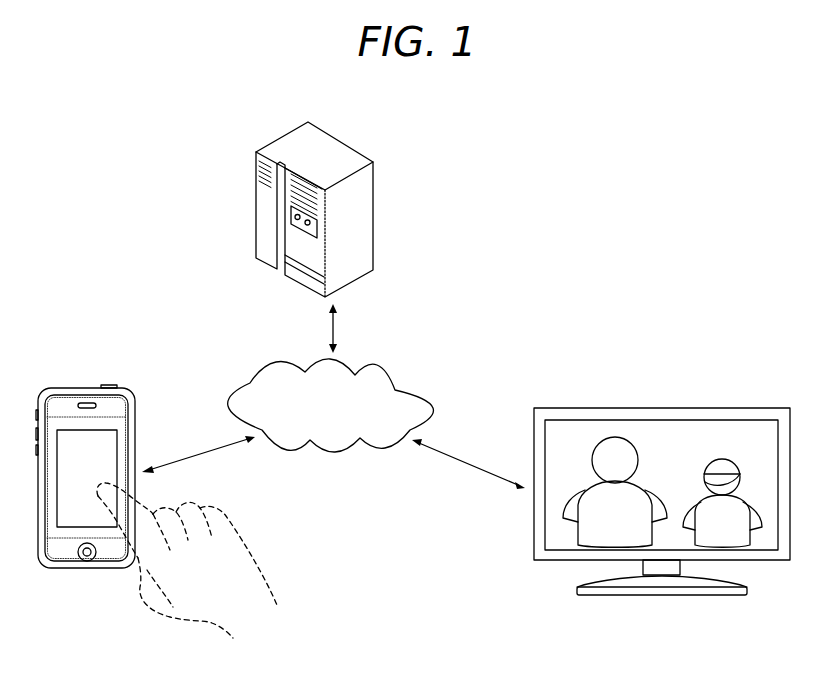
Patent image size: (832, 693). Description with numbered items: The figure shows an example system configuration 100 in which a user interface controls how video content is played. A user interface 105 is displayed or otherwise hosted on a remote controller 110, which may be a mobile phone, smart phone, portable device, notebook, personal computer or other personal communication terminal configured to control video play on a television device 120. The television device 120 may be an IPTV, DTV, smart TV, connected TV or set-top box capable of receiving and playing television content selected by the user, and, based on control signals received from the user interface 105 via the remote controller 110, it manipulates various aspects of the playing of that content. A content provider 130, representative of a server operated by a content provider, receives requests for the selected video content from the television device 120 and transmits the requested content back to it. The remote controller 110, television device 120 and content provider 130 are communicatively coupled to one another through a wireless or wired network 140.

The system configuration 100 is at (112, 147).
The user interface 105 is at (117, 443).
The remote controller 110 is at (88, 388).
The television device 120 is at (745, 407).
The content provider 130 is at (340, 138).
The network 140 is at (380, 363).